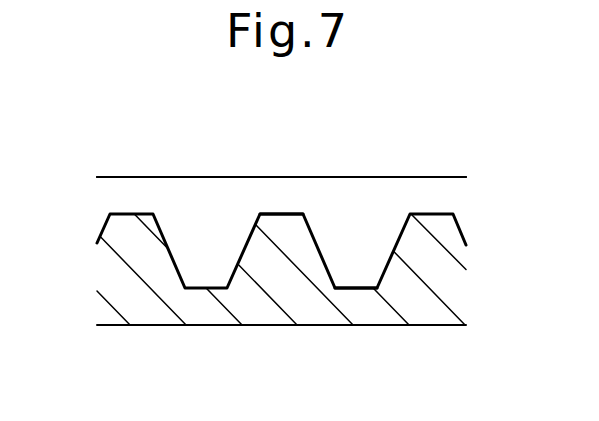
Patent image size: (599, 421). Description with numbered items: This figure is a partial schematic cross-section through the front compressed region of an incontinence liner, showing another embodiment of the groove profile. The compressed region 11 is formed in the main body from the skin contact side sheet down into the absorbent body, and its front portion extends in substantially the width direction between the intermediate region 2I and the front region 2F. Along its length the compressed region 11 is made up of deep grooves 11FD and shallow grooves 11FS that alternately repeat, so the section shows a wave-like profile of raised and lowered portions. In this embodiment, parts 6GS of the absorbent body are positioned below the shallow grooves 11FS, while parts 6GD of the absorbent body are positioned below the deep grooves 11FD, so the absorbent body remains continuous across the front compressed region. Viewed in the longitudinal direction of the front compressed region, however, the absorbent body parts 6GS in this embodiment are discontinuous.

The front region 2F is at (255, 144).
The intermediate region 2I is at (128, 177).
The compressed region 11 is at (192, 206).
The shallow grooves 11FS is at (283, 214).
The deep grooves 11FD is at (355, 288).
The absorbent body parts below shallow grooves 6GS is at (280, 270).
The absorbent body parts below deep grooves 6GD is at (355, 308).